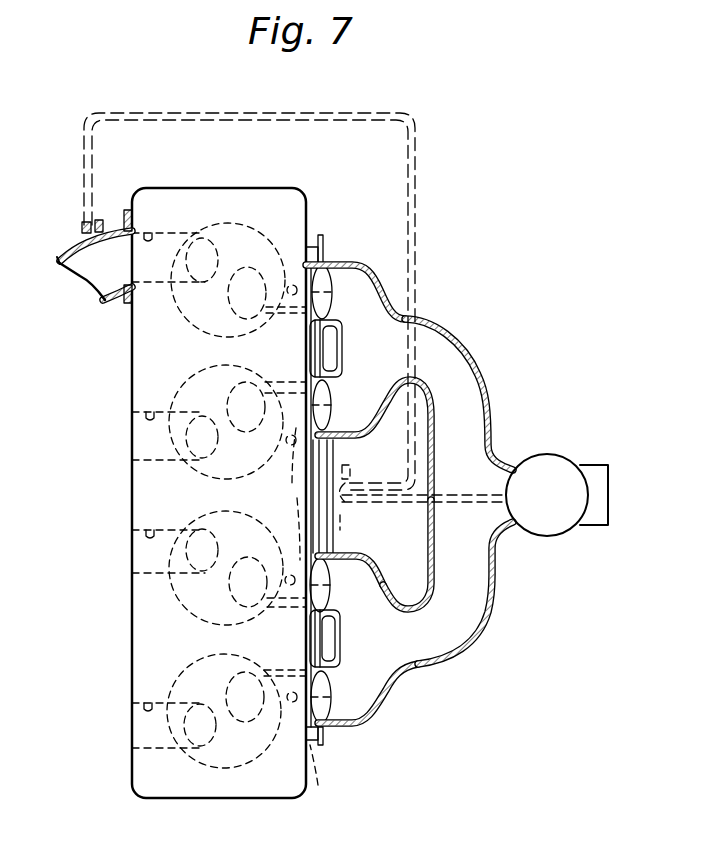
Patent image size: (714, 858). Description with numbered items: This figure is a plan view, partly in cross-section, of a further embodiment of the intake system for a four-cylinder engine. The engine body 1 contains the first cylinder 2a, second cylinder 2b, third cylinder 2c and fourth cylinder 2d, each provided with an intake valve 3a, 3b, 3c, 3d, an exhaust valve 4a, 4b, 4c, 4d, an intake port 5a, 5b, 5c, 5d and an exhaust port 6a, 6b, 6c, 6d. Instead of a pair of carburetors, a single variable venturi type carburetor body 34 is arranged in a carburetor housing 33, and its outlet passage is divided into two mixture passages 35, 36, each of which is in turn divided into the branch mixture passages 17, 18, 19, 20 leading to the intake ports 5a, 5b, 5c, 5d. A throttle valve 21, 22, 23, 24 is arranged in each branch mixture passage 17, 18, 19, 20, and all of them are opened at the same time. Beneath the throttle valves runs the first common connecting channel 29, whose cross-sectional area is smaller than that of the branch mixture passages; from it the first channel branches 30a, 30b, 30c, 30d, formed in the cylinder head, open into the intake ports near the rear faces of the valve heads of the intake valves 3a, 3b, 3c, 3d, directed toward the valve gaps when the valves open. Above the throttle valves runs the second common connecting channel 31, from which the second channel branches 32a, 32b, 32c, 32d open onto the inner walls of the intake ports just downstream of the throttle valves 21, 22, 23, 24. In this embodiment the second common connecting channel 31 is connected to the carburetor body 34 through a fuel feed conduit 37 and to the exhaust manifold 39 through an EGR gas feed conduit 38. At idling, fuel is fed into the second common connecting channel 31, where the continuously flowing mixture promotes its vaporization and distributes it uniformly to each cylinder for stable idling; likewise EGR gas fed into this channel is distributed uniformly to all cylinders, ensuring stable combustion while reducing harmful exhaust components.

The engine body 1 is at (233, 473).
The No. 1 cylinder 2a is at (190, 280).
The No. 2 cylinder 2b is at (189, 428).
The No. 3 cylinder 2c is at (189, 568).
The No. 4 cylinder 2d is at (206, 749).
The intake valve 3a is at (247, 260).
The intake valve 3b is at (229, 387).
The intake valve 3c is at (246, 551).
The intake valve 3d is at (229, 676).
The exhaust valve 4a is at (200, 242).
The exhaust valve 4b is at (188, 411).
The exhaust valve 4c is at (200, 533).
The exhaust valve 4d is at (187, 696).
The intake port 5a is at (282, 258).
The intake port 5b is at (284, 453).
The intake port 5c is at (281, 553).
The intake port 5d is at (279, 737).
The exhaust port 6a is at (148, 222).
The exhaust port 6b is at (147, 401).
The exhaust port 6c is at (146, 523).
The exhaust port 6d is at (147, 695).
The branch mixture passage 17 is at (355, 286).
The branch mixture passage 18 is at (374, 440).
The branch mixture passage 19 is at (358, 495).
The branch mixture passage 20 is at (368, 693).
The throttle valve 21 is at (342, 275).
The throttle valve 22 is at (350, 392).
The throttle valve 23 is at (363, 583).
The throttle valve 24 is at (341, 717).
The first common connecting channel 29 is at (362, 465).
The first channel branch 30a is at (297, 319).
The first channel branch 30b is at (297, 379).
The first channel branch 30c is at (295, 613).
The first channel branch 30d is at (294, 672).
The second common connecting channel 31 is at (358, 518).
The second channel branch 32a is at (339, 226).
The second channel branch 32b is at (260, 456).
The second channel branch 32c is at (281, 519).
The second channel branch 32d is at (332, 769).
The carburetor housing 33 is at (459, 376).
The carburetor body 34 is at (557, 479).
The mixture passage 35 is at (416, 481).
The mixture passage 36 is at (465, 593).
The fuel feed conduit 37 is at (424, 516).
The EGR gas feed conduit 38 is at (272, 301).
The exhaust manifold 39 is at (81, 256).